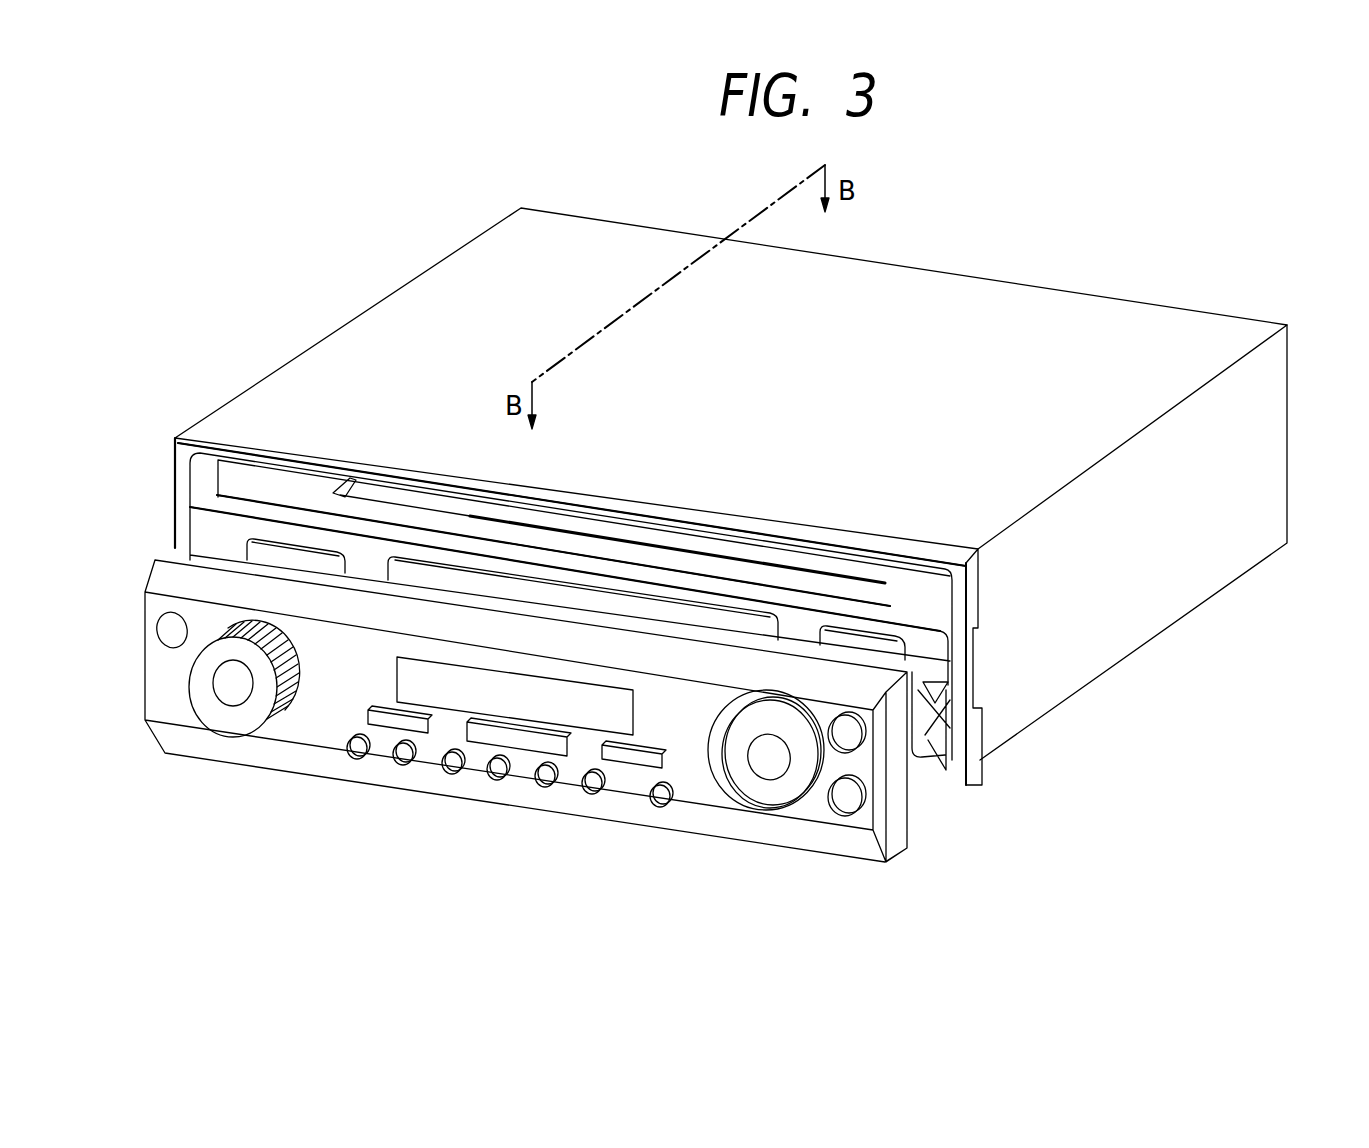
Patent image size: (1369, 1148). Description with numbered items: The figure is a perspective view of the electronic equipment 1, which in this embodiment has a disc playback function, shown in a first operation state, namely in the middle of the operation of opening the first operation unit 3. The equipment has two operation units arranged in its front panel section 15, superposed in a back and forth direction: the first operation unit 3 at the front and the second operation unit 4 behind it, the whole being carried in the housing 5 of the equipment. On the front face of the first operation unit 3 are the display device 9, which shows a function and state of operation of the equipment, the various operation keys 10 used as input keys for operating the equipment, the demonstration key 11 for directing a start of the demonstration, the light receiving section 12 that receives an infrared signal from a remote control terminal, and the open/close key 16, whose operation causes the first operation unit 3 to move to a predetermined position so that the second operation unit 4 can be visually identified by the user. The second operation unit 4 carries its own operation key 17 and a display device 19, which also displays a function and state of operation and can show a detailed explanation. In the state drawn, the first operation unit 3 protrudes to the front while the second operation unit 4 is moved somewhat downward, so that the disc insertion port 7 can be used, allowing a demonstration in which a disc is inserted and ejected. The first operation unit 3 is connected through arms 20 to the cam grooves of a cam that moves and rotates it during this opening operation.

The electronic equipment 1 is at (921, 250).
The first operation unit 3 is at (660, 828).
The second operation unit 4 is at (901, 597).
The housing 5 is at (1063, 308).
The disc insertion port 7 is at (452, 498).
The display device 9 is at (590, 705).
The operation keys 10 is at (265, 718).
The demonstration key 11 is at (840, 806).
The light receiving section 12 is at (158, 624).
The front panel section 15 is at (978, 600).
The open/close key 16 is at (847, 743).
The operation key 17 is at (242, 544).
The display device 19 is at (725, 610).
The arms 20 is at (925, 770).